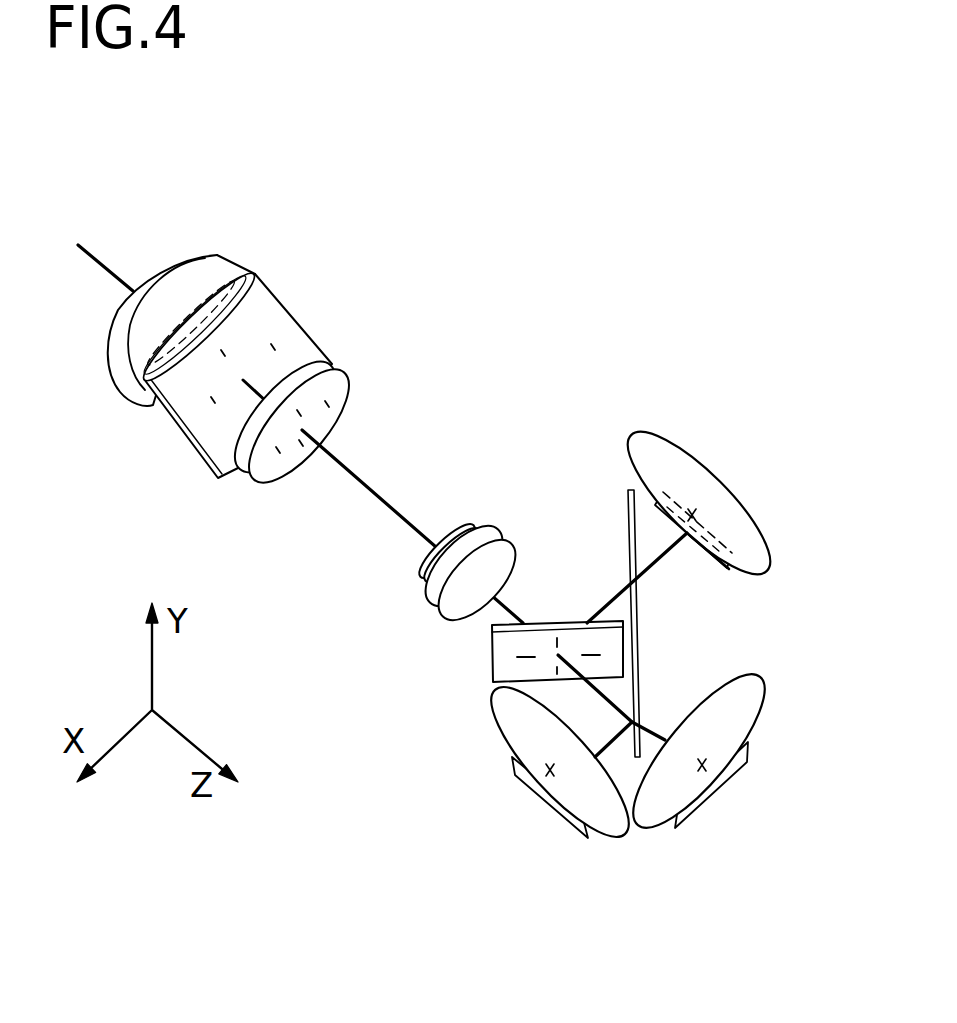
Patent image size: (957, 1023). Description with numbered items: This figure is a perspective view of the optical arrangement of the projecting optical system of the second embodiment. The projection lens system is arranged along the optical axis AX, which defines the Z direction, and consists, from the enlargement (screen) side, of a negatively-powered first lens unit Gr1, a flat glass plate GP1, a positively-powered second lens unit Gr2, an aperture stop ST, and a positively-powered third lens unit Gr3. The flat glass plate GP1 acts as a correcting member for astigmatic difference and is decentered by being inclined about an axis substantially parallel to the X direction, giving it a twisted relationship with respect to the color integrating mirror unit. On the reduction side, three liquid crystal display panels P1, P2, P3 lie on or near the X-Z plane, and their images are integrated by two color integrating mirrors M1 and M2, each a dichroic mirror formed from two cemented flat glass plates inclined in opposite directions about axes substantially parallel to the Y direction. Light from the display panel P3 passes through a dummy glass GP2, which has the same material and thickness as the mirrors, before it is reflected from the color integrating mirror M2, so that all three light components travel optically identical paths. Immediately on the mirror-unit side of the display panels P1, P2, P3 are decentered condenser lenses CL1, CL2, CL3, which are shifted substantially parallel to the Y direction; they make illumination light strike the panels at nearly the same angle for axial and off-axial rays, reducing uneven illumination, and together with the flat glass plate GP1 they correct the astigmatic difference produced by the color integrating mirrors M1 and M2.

The optical axis AX is at (88, 247).
The first lens unit Gr1 is at (228, 256).
The flat glass plate GP1 is at (282, 303).
The second lens unit Gr2 is at (337, 395).
The aperture stop ST is at (473, 527).
The third lens unit Gr3 is at (507, 542).
The dummy glass GP2 is at (626, 490).
The color integrating mirror M2 is at (492, 666).
The color integrating mirror M1 is at (640, 688).
The condenser lens CL1 is at (765, 697).
The condenser lens CL2 is at (497, 728).
The condenser lens CL3 is at (735, 480).
The display panel P1 is at (710, 808).
The display panel P2 is at (578, 832).
The display panel P3 is at (728, 570).